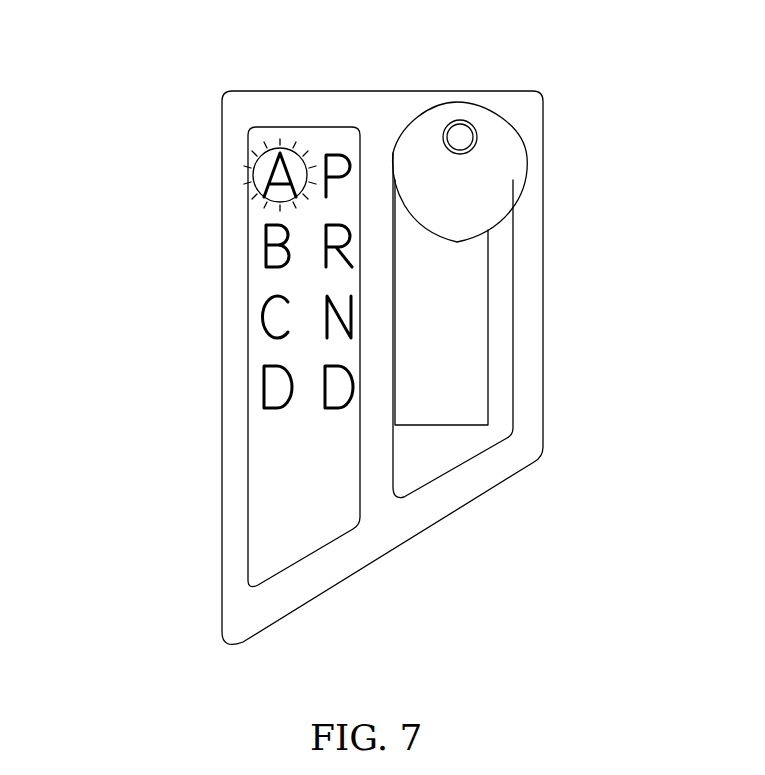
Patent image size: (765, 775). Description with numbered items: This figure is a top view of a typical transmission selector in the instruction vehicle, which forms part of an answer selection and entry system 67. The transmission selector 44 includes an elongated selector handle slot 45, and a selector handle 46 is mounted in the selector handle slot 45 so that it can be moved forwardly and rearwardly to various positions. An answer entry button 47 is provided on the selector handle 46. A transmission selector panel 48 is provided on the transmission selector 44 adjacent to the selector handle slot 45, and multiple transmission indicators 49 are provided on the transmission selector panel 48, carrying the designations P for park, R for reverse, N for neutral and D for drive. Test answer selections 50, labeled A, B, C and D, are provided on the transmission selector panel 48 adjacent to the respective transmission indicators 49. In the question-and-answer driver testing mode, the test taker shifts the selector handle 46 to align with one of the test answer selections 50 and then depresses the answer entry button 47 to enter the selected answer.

The answer selection and entry system 67 is at (140, 70).
The transmission selector 44 is at (532, 118).
The selector handle slot 45 is at (512, 338).
The selector handle 46 is at (493, 175).
The answer entry button 47 is at (462, 133).
The transmission selector panel 48 is at (267, 453).
The transmission indicators 49 is at (337, 227).
The test answer selections 50 is at (267, 242).